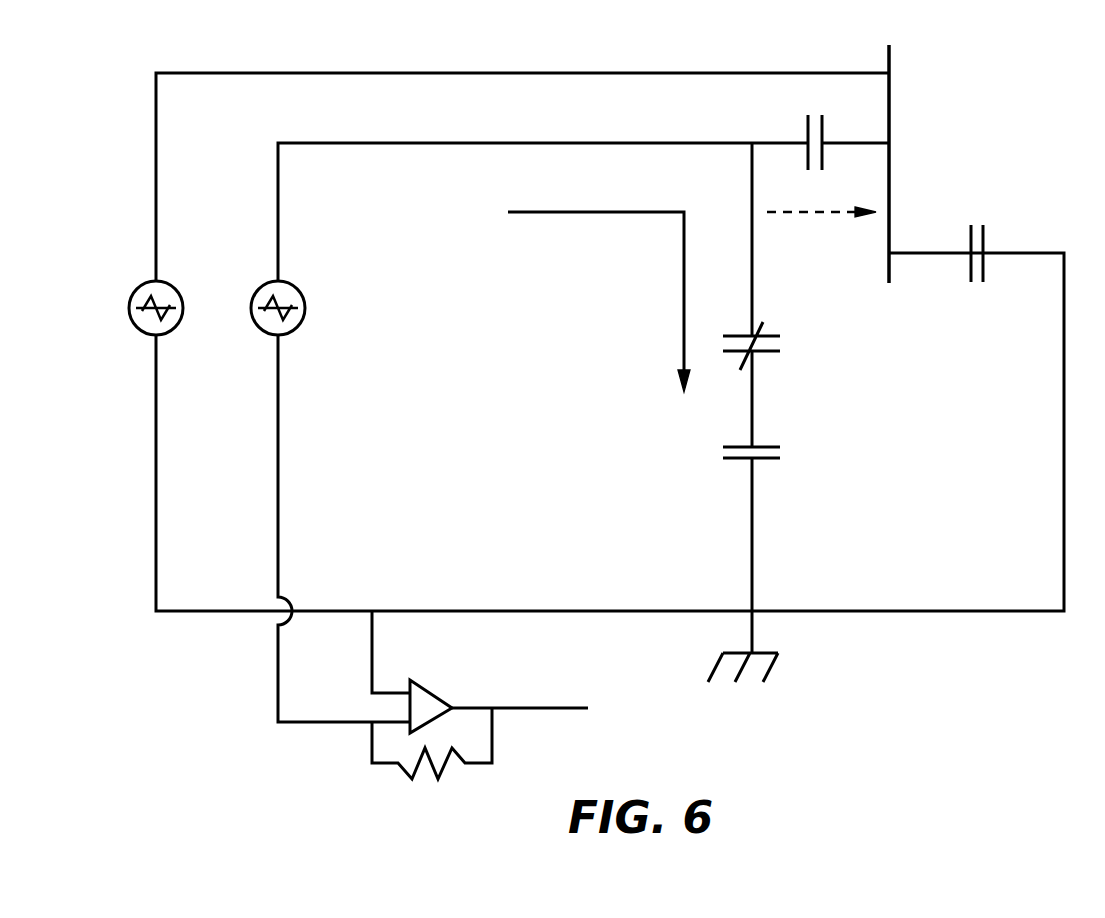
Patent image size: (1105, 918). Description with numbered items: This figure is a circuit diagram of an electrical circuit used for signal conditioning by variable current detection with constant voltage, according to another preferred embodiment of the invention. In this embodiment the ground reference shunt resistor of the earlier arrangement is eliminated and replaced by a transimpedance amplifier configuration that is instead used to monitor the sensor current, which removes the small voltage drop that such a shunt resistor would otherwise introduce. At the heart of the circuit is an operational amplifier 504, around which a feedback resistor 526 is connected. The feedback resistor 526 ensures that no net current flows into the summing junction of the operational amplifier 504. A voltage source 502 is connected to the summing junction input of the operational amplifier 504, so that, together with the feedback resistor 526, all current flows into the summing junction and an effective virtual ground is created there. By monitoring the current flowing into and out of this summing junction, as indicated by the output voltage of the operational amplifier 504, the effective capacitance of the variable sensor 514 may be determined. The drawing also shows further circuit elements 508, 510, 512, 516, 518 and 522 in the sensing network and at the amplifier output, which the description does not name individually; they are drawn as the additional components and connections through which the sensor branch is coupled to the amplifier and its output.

The voltage source 502 is at (263, 286).
The operational amplifier 504 is at (430, 690).
The coupling capacitor 508 is at (806, 130).
The sensing electrode 510 is at (892, 98).
The capacitor 512 is at (986, 237).
The variable sensor 514 is at (768, 352).
The capacitor 516 is at (766, 462).
The output 518 is at (545, 710).
The second AC signal source 522 is at (141, 286).
The feedback resistor 526 is at (410, 775).